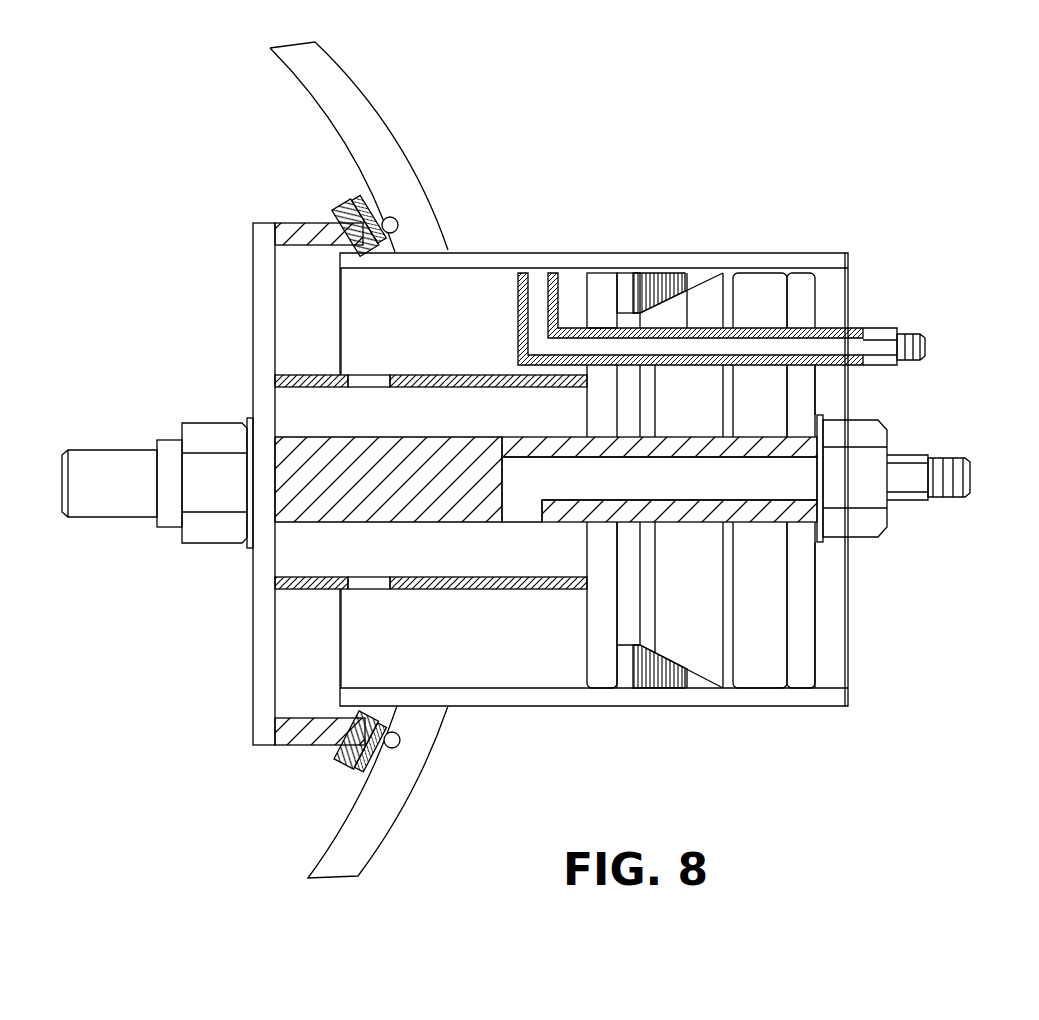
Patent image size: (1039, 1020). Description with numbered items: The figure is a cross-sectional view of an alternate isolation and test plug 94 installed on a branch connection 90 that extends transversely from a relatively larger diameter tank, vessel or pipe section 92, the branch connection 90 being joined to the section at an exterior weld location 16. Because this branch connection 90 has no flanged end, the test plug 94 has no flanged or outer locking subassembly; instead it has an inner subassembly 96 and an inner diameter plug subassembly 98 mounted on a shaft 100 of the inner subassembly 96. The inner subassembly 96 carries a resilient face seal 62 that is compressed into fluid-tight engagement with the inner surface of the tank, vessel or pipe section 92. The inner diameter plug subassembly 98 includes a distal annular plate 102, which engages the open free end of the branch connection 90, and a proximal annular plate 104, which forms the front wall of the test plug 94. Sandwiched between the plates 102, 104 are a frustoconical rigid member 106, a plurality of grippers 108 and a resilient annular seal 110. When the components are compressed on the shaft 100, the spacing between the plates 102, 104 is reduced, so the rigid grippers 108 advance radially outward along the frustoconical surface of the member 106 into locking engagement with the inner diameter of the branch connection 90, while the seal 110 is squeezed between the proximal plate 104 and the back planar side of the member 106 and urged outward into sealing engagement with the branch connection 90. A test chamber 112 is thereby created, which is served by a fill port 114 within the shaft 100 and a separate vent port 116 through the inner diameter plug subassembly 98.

The exterior weld location 16 is at (447, 250).
The resilient face seal 62 is at (396, 219).
The branch connection 90 is at (543, 704).
The tank, vessel or pipe section 92 is at (410, 797).
The test plug 94 is at (808, 597).
The inner subassembly 96 is at (205, 303).
The inner diameter plug subassembly 98 is at (820, 293).
The shaft 100 is at (470, 442).
The distal annular plate 102 is at (602, 620).
The proximal annular plate 104 is at (808, 663).
The frustoconical rigid member 106 is at (702, 292).
The grippers 108 is at (663, 271).
The resilient annular seal 110 is at (758, 271).
The test chamber 112 is at (475, 290).
The fill port 114 is at (960, 457).
The vent port 116 is at (913, 333).